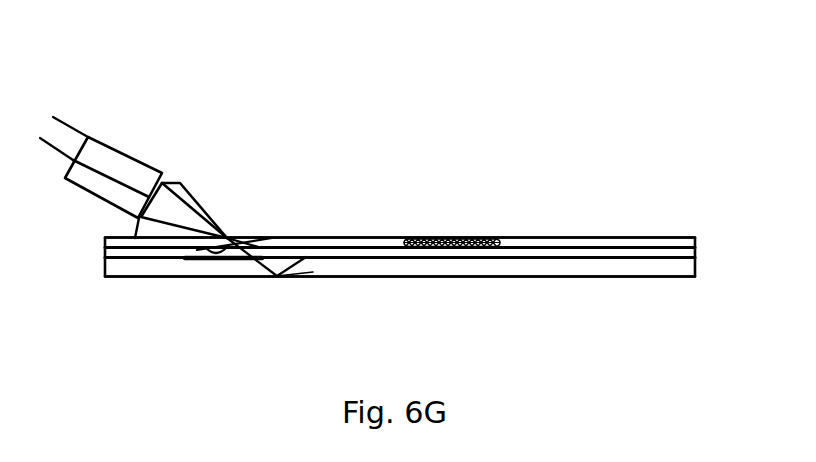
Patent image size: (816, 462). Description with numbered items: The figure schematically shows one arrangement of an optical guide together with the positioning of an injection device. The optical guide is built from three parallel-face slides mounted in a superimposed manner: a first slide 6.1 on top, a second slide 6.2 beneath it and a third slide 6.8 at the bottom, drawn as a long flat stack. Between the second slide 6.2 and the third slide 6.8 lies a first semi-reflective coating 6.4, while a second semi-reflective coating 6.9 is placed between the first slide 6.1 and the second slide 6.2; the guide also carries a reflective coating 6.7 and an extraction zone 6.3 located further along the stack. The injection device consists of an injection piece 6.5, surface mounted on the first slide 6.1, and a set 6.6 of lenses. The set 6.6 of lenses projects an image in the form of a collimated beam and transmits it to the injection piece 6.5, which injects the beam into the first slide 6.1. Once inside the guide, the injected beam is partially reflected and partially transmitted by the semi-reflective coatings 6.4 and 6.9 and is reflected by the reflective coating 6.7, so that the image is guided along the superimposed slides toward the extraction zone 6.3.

The first parallel-face slide 6.1 is at (568, 240).
The second parallel-face slide 6.2 is at (653, 252).
The extraction zone 6.3 is at (408, 238).
The first semi-reflective coating 6.4 is at (313, 272).
The injection piece 6.5 is at (190, 198).
The set of lenses 6.6 is at (140, 163).
The reflective coating 6.7 is at (198, 252).
The third parallel-face slide 6.8 is at (588, 271).
The second semi-reflective coating 6.9 is at (230, 238).